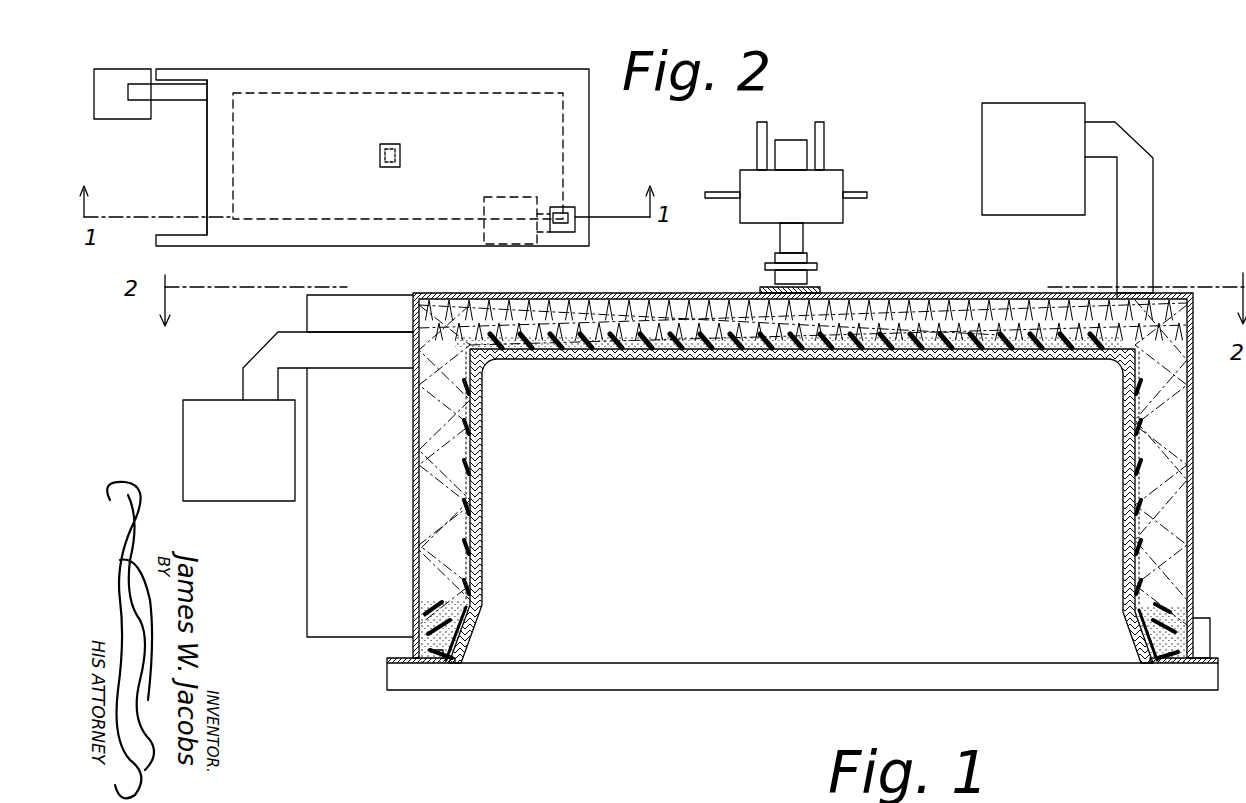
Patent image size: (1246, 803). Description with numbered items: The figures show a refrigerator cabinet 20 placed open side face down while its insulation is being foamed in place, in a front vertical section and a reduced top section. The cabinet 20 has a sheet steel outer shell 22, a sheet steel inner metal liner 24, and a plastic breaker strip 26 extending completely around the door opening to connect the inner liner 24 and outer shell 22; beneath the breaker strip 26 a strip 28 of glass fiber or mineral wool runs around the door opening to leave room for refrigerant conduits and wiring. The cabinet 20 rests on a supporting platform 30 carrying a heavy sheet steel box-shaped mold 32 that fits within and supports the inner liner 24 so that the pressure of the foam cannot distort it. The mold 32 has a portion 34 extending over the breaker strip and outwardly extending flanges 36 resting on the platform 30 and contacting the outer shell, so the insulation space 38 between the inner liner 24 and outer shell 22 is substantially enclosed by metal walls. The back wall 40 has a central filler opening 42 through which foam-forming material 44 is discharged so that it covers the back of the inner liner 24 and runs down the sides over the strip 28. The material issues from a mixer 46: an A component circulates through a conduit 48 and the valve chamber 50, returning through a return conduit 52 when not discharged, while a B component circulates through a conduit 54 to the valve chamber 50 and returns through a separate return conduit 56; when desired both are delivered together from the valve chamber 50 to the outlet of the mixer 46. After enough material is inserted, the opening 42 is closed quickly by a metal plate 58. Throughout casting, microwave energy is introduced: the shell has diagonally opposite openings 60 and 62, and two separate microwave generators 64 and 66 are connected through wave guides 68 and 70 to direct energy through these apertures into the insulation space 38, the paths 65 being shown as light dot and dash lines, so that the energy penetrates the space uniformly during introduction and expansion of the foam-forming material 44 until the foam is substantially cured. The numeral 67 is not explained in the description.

In FIG. 2, the refrigerator cabinet 20 is at (398, 146).
In FIG. 1, the refrigerator cabinet 20 is at (768, 458).
In FIG. 2, the outer shell 22 is at (420, 69).
In FIG. 1, the outer shell 22 is at (413, 437).
In FIG. 2, the inner metal liner 24 is at (533, 95).
In FIG. 1, the inner metal liner 24 is at (773, 352).
In FIG. 1, the plastic breaker strip 26 is at (463, 618).
In FIG. 1, the strip of glass fiber or mineral wool 28 is at (463, 602).
In FIG. 1, the supporting platform 30 is at (680, 690).
In FIG. 1, the box-shaped mold 32 is at (482, 452).
In FIG. 1, the portion of the mold 34 is at (467, 645).
In FIG. 1, the outwardly extending flanges 36 is at (400, 658).
In FIG. 1, the insulation space 38 is at (620, 327).
In FIG. 2, the back wall 40 is at (325, 104).
In FIG. 1, the back wall 40 is at (965, 293).
In FIG. 2, the central filler opening 42 is at (392, 162).
In FIG. 1, the central filler opening 42 is at (775, 299).
In FIG. 1, the foam-forming material 44 is at (880, 350).
In FIG. 1, the mixer 46 is at (803, 238).
In FIG. 1, the conduit 48 is at (757, 127).
In FIG. 1, the valve chamber 50 is at (832, 180).
In FIG. 1, the return conduit 52 is at (718, 192).
In FIG. 1, the conduit 54 is at (824, 127).
In FIG. 1, the separate return conduit 56 is at (858, 198).
In FIG. 2, the metal plate 58 is at (405, 146).
In FIG. 1, the metal plate 58 is at (820, 291).
In FIG. 2, the opening 60 is at (570, 222).
In FIG. 1, the opening 60 is at (1137, 294).
In FIG. 2, the opening 62 is at (205, 92).
In FIG. 1, the opening 62 is at (410, 350).
In FIG. 2, the microwave generator 64 is at (487, 197).
In FIG. 1, the paths of the microwave energy 65 is at (552, 330).
In FIG. 2, the microwave generator 66 is at (115, 105).
In FIG. 1, the microwave generator 66 is at (183, 433).
In FIG. 1, the supply unit 67 is at (1040, 120).
In FIG. 2, the wave guide 68 is at (578, 212).
In FIG. 1, the wave guide 68 is at (1140, 178).
In FIG. 2, the wave guide 70 is at (167, 95).
In FIG. 1, the wave guide 70 is at (295, 340).